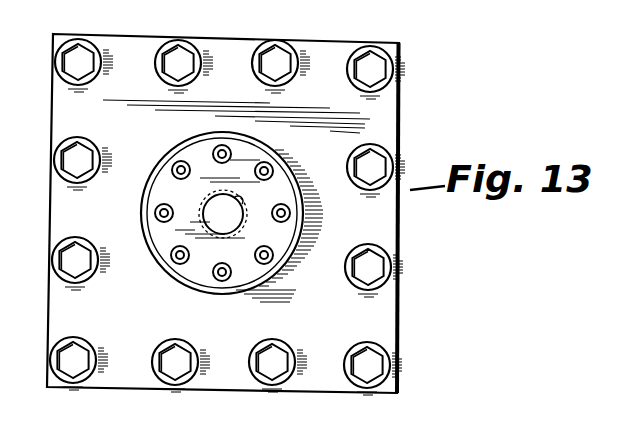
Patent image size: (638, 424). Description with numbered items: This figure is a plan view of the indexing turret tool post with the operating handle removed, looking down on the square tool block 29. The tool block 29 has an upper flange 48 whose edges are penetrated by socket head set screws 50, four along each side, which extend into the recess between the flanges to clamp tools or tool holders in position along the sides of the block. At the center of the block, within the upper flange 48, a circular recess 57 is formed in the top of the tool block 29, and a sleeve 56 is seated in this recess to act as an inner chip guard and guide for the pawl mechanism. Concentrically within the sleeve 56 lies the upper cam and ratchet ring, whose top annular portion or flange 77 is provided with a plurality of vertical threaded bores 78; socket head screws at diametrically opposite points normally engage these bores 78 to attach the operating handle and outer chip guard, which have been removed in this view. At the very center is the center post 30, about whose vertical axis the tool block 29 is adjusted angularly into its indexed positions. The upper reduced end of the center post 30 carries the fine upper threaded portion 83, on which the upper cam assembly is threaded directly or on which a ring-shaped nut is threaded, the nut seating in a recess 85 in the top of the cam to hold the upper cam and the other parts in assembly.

The upper flange 48 is at (68, 117).
The tool block 29 is at (402, 112).
The socket head set screws 50 is at (270, 53).
The sleeve 56 is at (303, 218).
The circular recess 57 is at (284, 151).
The top annular portion or flange 77 is at (224, 200).
The vertical threaded bores 78 is at (181, 162).
The upper threaded portion of the center post 83 is at (208, 206).
The recess 85 is at (240, 204).
The center post 30 is at (214, 231).